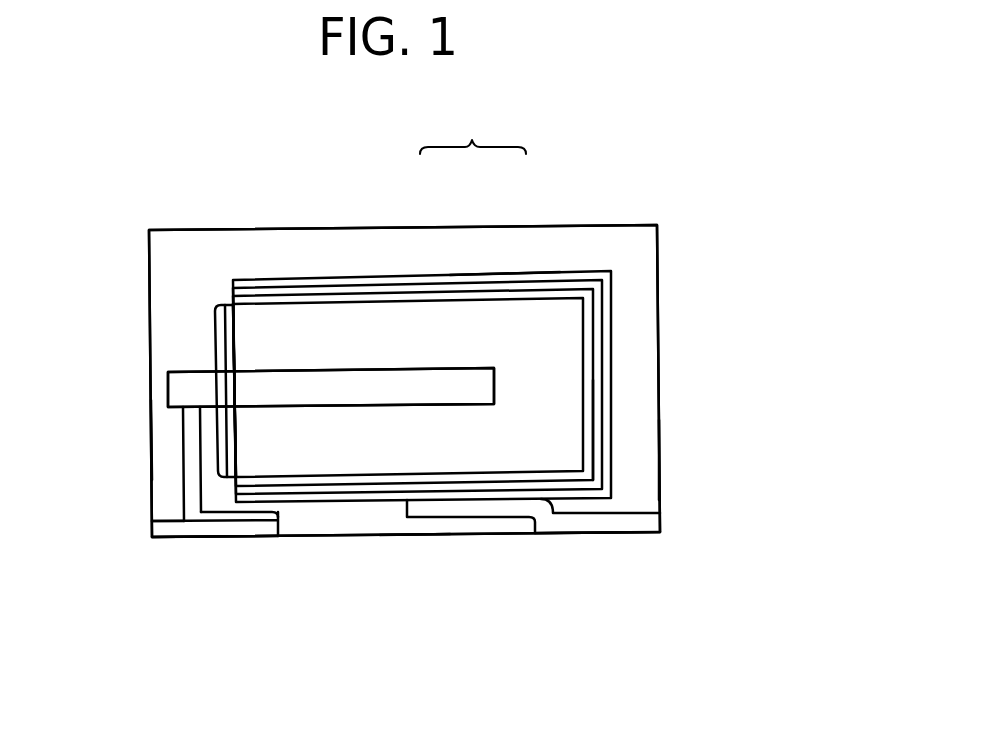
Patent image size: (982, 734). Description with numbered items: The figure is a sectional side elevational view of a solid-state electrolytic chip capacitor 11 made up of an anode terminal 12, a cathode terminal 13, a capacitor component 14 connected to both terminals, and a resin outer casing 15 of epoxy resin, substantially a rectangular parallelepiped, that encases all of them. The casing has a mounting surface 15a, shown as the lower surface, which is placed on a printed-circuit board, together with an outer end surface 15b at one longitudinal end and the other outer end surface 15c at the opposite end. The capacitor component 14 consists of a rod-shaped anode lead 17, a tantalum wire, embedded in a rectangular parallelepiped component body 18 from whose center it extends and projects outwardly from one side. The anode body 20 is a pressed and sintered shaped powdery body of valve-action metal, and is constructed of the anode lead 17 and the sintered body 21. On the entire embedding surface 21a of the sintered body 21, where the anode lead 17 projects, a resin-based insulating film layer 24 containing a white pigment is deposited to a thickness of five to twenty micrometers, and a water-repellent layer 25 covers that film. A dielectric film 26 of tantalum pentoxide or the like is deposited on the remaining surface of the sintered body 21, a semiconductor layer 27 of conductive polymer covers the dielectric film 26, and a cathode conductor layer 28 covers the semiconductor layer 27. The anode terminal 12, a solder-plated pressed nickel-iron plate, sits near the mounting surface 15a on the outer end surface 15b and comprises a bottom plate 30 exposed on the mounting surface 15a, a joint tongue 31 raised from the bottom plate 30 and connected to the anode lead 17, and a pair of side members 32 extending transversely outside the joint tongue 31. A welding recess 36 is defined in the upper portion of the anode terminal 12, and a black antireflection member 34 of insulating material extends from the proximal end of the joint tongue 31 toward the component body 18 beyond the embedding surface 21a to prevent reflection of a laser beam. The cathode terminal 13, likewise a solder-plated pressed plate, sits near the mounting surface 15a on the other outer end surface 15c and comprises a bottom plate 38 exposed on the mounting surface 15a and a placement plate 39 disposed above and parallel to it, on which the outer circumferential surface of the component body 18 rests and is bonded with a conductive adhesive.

The chip capacitor 11 is at (702, 224).
The anode terminal 12 is at (198, 538).
The cathode terminal 13 is at (583, 538).
The capacitor component 14 is at (473, 131).
The resin outer casing 15 is at (204, 220).
The mounting surface 15a is at (419, 538).
The outer end surface 15b is at (152, 440).
The other outer end surface 15c is at (655, 466).
The anode lead 17 is at (438, 358).
The component body 18 is at (502, 262).
The anode body 20 is at (588, 415).
The sintered body 21 is at (560, 347).
The embedding surface 21a is at (233, 358).
The resin-based insulating film layer 24 is at (225, 338).
The water-repellent layer 25 is at (214, 320).
The dielectric film 26 is at (288, 292).
The semiconductor layer 27 is at (313, 285).
The cathode conductor layer 28 is at (366, 278).
The bottom plate 30 is at (240, 527).
The joint tongue 31 is at (190, 482).
The side members 32 is at (165, 530).
The antireflection member 34 is at (277, 513).
The welding recess 36 is at (190, 405).
The bottom plate 38 is at (636, 534).
The placement plate 39 is at (467, 506).